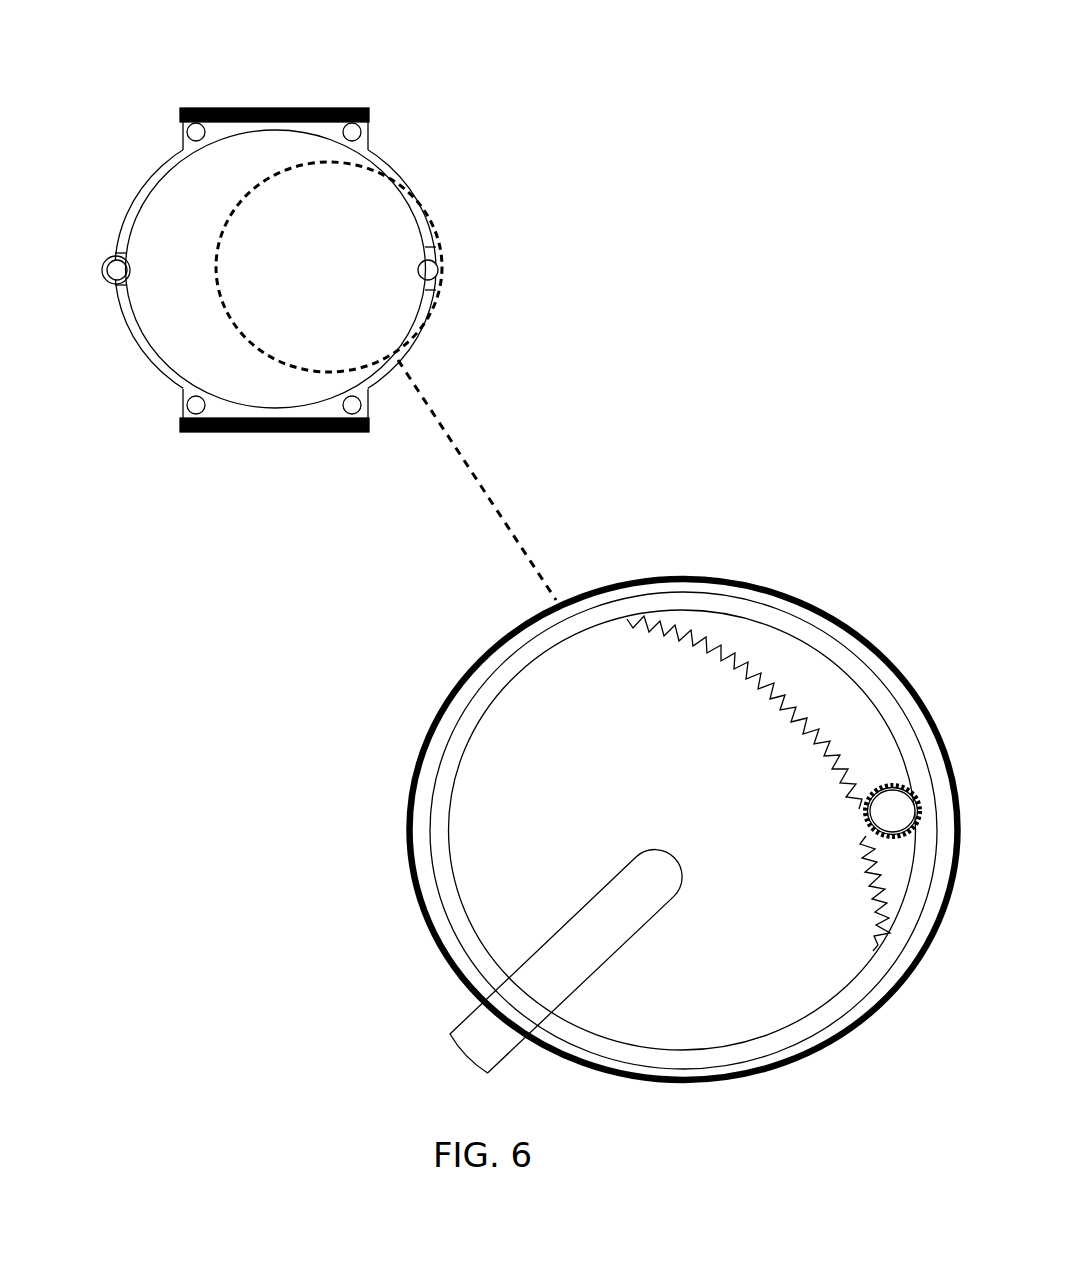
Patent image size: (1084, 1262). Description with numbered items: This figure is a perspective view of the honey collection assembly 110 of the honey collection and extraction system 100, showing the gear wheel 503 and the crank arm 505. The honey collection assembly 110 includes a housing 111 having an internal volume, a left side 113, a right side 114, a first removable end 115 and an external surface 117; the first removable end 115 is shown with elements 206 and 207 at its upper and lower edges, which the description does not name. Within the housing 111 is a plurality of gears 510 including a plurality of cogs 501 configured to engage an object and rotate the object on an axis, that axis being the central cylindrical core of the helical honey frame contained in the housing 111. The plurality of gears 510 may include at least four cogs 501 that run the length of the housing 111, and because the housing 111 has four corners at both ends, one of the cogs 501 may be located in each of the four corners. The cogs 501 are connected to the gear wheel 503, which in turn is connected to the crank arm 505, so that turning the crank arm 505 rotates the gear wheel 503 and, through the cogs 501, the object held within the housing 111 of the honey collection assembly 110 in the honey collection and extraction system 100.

The honey collection and extraction system 100 is at (698, 97).
The honey collection assembly 110 is at (725, 136).
The housing 111 is at (445, 772).
The left side 113 is at (122, 340).
The right side 114 is at (408, 172).
The first removable end 115 is at (163, 208).
The external surface 117 is at (155, 378).
The upper mounting bracket 206 is at (180, 109).
The lower mounting bracket 207 is at (180, 428).
The plurality of gears 510 is at (364, 106).
The cogs 501 is at (879, 787).
The gear wheel 503 is at (792, 977).
The crank arm 505 is at (497, 858).